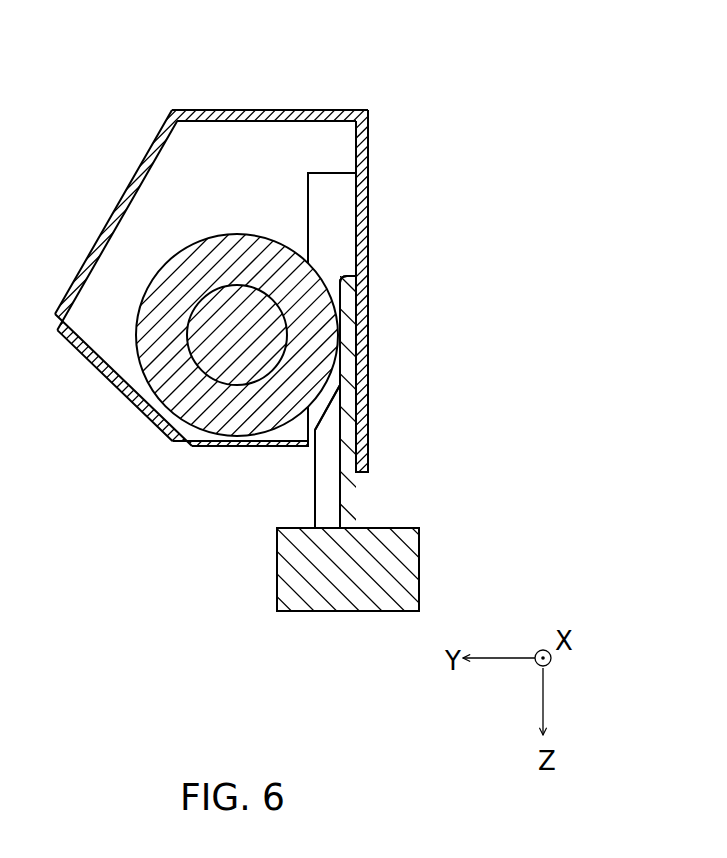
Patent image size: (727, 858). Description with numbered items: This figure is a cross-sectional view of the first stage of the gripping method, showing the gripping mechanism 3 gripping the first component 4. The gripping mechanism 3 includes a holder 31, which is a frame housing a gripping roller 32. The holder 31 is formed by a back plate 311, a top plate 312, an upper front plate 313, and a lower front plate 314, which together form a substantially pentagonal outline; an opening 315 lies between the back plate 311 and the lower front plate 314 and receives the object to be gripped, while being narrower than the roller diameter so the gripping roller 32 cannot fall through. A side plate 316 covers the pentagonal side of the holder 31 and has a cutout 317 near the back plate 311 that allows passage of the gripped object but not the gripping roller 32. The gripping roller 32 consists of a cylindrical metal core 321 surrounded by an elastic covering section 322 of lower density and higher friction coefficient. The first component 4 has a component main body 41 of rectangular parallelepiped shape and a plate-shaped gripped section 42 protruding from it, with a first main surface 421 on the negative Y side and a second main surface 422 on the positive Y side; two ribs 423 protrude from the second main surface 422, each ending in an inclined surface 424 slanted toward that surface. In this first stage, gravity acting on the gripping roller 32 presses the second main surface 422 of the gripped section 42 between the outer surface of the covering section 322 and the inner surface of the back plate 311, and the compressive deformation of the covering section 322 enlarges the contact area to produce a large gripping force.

The gripping mechanism 3 is at (339, 388).
The holder 31 is at (339, 388).
The back plate 311 is at (368, 218).
The top plate 312 is at (280, 112).
The upper front plate 313 is at (102, 232).
The lower front plate 314 is at (93, 352).
The opening 315 is at (235, 452).
The side plate 316 is at (198, 140).
The cutout 317 is at (342, 187).
The gripping roller 32 is at (237, 308).
The core 321 is at (238, 335).
The covering section 322 is at (205, 267).
The first component 4 is at (348, 443).
The component main body 41 is at (419, 558).
The gripped section 42 is at (348, 398).
The first main surface 421 is at (358, 493).
The second main surface 422 is at (348, 278).
The rib 423 is at (315, 475).
The inclined surface 424 is at (330, 404).